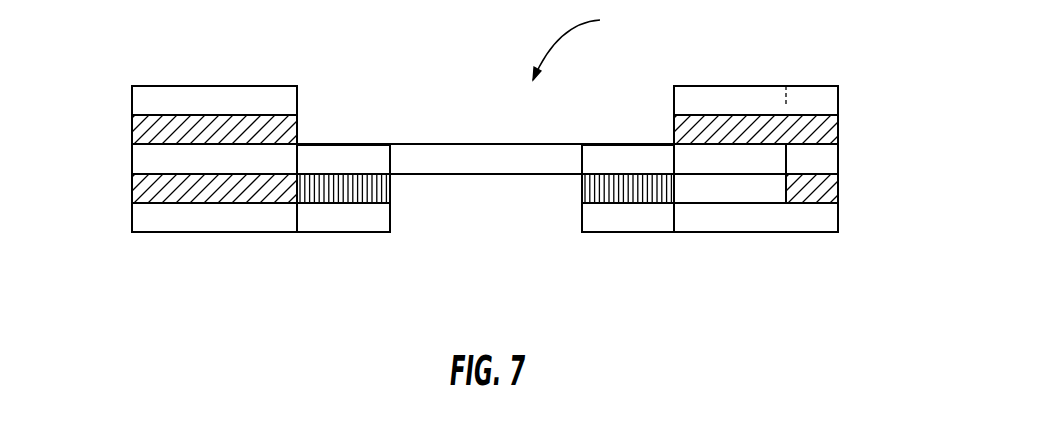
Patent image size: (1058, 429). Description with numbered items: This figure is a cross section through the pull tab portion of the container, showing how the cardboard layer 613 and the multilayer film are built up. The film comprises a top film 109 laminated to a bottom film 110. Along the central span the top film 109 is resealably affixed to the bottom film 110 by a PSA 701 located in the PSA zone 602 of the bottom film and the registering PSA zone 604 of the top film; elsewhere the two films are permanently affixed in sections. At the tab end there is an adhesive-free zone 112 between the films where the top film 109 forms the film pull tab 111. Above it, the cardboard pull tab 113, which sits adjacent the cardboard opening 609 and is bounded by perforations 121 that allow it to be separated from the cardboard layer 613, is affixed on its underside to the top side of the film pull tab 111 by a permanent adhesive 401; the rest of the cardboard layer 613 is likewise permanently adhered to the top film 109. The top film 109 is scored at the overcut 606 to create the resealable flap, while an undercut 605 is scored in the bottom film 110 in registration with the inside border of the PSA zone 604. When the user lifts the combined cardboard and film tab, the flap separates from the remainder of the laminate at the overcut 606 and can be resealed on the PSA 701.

The top film 109 is at (140, 155).
The bottom film 110 is at (813, 227).
The film pull tab 111 is at (688, 160).
The adhesive-free zone 112 is at (749, 195).
The cardboard pull tab 113 is at (764, 100).
The perforations 121 is at (786, 105).
The permanent adhesive 401 is at (147, 126).
The PSA zone of bottom film 602 is at (335, 213).
The PSA zone of top film 604 is at (331, 155).
The undercut 605 is at (391, 212).
The overcut 606 is at (788, 160).
The cardboard opening 609 is at (586, 44).
The cardboard layer 613 is at (147, 100).
The PSA 701 is at (307, 190).